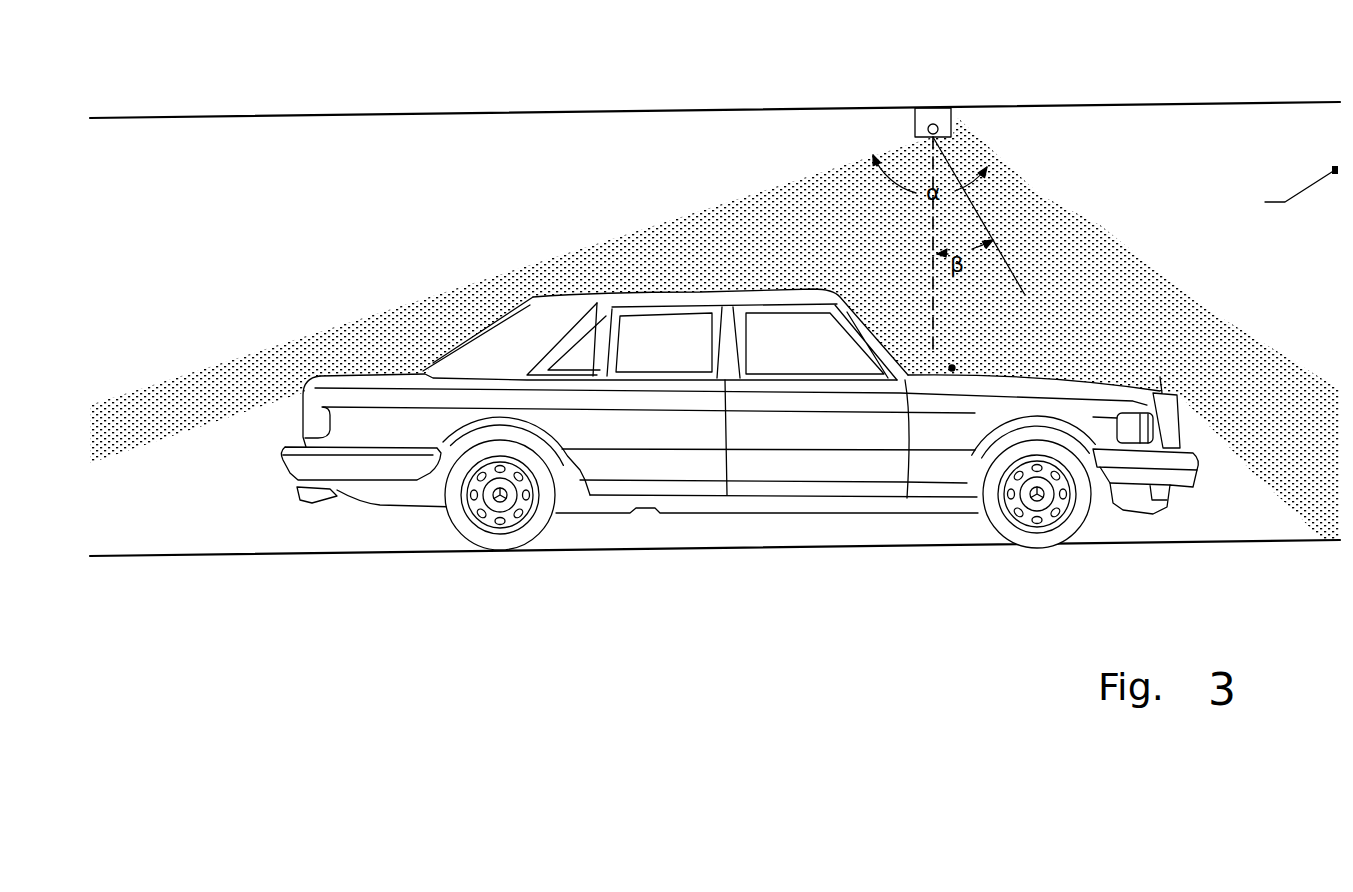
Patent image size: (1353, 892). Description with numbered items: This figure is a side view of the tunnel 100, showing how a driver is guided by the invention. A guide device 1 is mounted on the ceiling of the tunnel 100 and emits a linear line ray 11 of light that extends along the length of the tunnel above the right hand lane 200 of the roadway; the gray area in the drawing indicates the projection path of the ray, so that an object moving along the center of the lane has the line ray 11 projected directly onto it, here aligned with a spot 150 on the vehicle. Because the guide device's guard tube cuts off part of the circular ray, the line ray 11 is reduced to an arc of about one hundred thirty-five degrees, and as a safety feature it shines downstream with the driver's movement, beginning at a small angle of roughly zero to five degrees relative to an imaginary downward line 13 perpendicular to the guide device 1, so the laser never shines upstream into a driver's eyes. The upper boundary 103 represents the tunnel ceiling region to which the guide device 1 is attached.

The guide device 1 is at (957, 118).
The line ray 11 is at (220, 583).
The imaginary downward line 13 is at (935, 254).
The tunnel 100 is at (867, 477).
The upper boundary / mounting structure 103 is at (612, 112).
The spot 150 is at (953, 372).
The right hand lane 200 is at (632, 550).